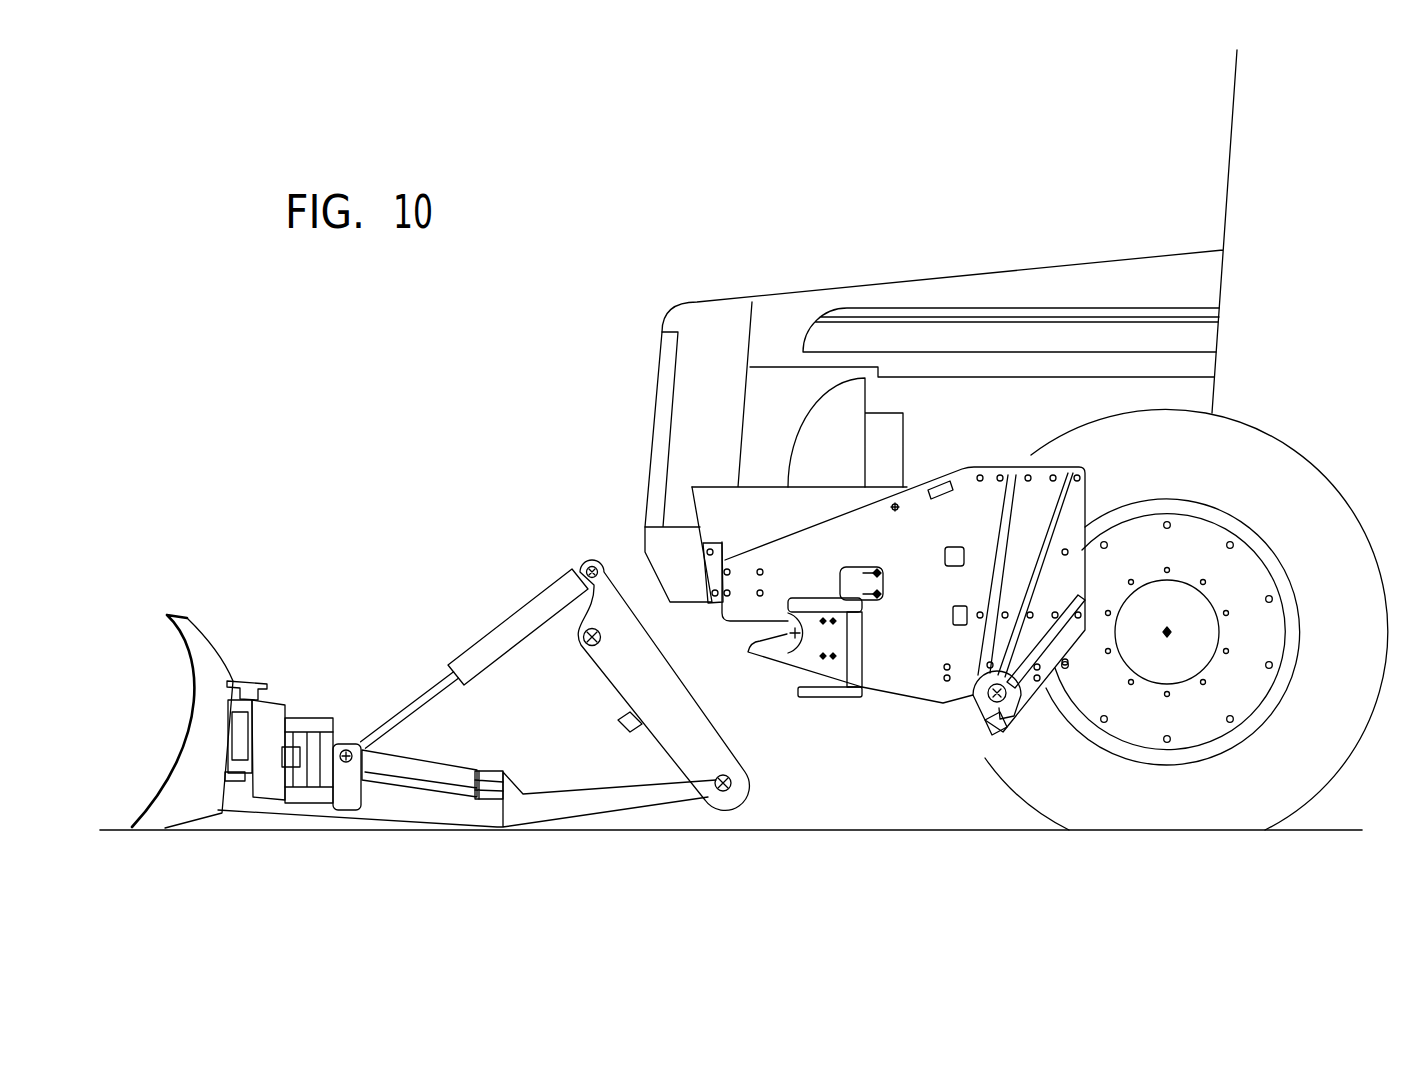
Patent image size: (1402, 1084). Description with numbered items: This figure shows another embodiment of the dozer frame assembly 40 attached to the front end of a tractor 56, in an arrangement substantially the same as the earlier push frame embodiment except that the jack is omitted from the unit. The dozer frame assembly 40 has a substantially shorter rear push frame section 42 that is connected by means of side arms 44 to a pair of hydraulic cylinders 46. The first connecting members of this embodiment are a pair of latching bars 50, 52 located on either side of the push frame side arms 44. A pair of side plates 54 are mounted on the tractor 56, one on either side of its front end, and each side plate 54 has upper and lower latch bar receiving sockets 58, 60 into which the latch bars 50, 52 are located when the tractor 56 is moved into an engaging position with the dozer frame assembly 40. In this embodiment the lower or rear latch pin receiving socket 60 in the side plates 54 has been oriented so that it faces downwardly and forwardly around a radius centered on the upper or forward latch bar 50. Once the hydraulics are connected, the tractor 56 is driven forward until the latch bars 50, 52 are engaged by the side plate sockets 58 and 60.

The dozer frame assembly 40 is at (292, 698).
The rear push frame section 42 is at (587, 798).
The side arms 44 is at (695, 723).
The hydraulic cylinders 46 is at (560, 588).
The latching bar 50 is at (577, 638).
The latching bar 52 is at (730, 780).
The side plate 54 is at (997, 480).
The tractor 56 is at (1118, 270).
The upper latch bar receiving socket 58 is at (790, 633).
The lower latch bar receiving socket 60 is at (990, 701).